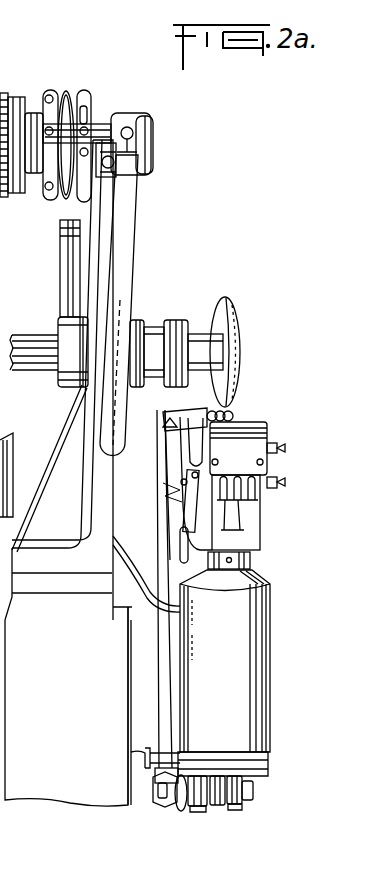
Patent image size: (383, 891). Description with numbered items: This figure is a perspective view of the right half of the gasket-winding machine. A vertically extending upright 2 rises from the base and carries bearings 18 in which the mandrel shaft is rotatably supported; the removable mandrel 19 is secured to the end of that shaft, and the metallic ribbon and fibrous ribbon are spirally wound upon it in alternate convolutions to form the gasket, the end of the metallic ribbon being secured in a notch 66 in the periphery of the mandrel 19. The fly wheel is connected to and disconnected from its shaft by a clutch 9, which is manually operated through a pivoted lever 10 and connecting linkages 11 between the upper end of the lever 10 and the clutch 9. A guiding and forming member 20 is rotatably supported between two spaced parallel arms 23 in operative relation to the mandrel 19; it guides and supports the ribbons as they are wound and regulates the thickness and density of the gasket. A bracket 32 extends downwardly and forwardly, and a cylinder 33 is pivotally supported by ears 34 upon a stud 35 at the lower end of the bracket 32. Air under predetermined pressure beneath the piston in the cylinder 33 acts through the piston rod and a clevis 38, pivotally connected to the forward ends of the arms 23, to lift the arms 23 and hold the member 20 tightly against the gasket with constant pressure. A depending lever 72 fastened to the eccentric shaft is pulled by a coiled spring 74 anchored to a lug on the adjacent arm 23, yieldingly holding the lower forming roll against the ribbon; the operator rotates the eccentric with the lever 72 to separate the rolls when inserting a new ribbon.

The clutch 9 is at (3, 92).
The connecting linkages 11 is at (100, 123).
The upright 2 is at (104, 245).
The pivoted lever 10 is at (123, 274).
The bearings 18 is at (72, 330).
The mandrel 19 is at (221, 300).
The notch 66 is at (232, 317).
The guiding and forming member 20 is at (237, 411).
The arms 23 is at (176, 455).
The coiled spring 74 is at (177, 493).
The depending lever 72 is at (182, 548).
The clevis 38 is at (243, 540).
The cylinder 33 is at (260, 700).
The stud 35 is at (254, 790).
The ears 34 is at (233, 812).
The bracket 32 is at (157, 678).